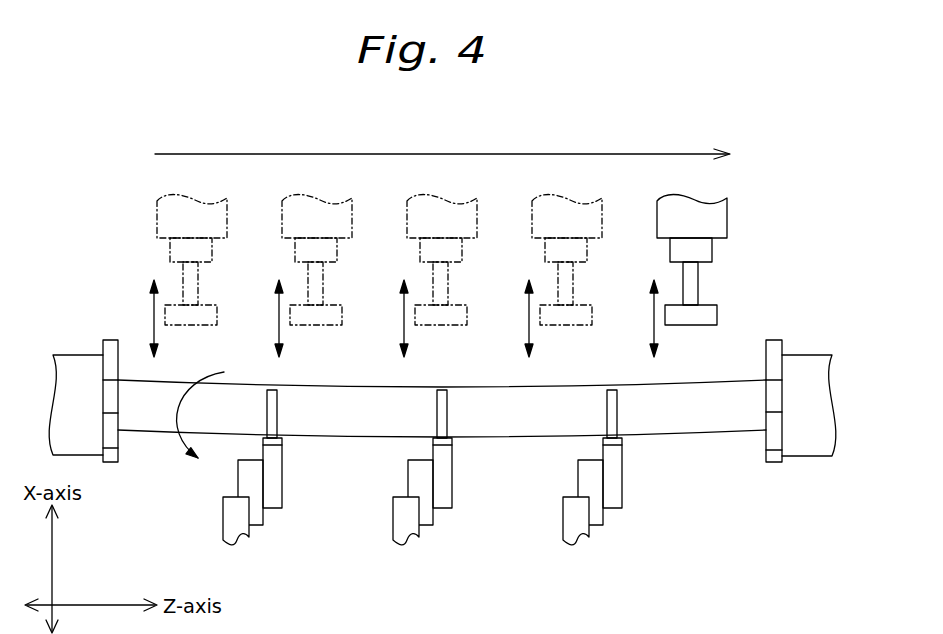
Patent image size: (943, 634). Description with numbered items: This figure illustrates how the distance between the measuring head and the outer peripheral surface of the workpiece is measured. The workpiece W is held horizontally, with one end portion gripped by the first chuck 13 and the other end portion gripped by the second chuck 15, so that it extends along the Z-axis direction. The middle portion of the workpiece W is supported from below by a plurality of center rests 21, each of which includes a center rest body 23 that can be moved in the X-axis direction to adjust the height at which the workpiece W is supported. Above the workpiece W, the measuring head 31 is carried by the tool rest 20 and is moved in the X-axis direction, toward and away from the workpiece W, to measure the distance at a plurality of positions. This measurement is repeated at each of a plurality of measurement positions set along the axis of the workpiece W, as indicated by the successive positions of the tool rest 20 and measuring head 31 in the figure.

The first chuck 13 is at (78, 362).
The second chuck 15 is at (802, 360).
The tool rest 20 is at (728, 251).
The measuring head 31 is at (708, 307).
The center rest body 23 is at (273, 505).
The center rest 21 is at (458, 498).
The workpiece W is at (673, 432).